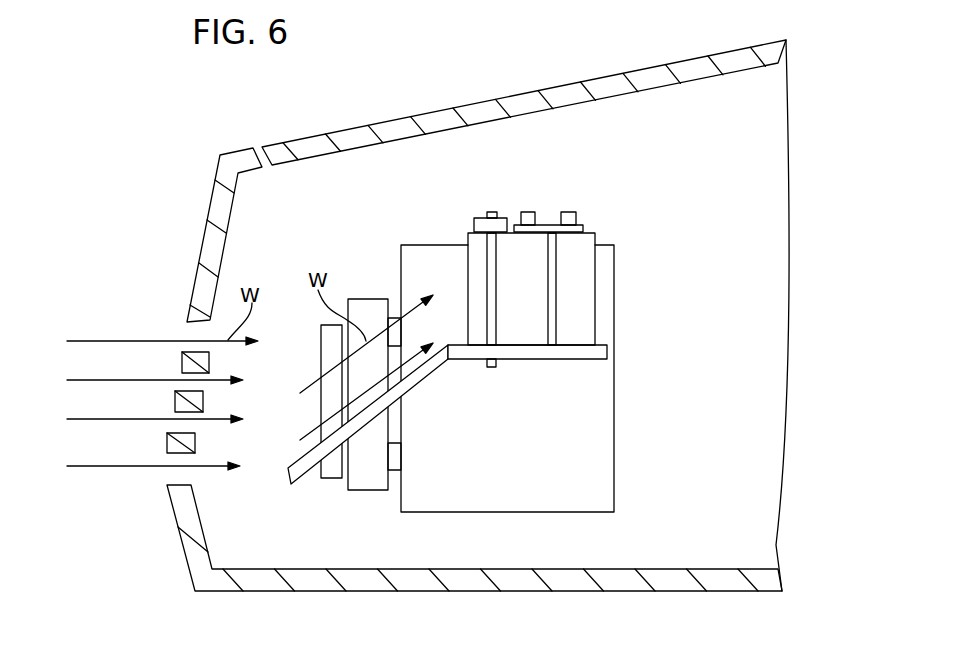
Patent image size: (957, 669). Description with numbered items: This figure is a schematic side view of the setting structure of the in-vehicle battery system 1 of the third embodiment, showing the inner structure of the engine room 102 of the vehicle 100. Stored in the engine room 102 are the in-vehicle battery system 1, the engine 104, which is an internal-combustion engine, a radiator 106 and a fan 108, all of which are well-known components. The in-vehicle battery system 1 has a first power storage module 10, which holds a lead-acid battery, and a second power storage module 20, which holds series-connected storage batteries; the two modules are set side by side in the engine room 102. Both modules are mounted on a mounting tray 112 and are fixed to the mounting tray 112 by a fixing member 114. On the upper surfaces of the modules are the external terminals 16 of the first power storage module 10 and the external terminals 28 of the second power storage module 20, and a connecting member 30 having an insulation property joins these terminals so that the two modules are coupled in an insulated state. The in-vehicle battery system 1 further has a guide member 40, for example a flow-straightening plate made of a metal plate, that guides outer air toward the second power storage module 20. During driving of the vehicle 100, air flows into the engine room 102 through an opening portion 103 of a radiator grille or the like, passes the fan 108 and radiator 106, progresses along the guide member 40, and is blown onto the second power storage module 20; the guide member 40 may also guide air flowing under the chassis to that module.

The in-vehicle battery system 1 is at (609, 313).
The first power storage module 10 is at (538, 264).
The external terminals 16 is at (527, 212).
The second power storage module 20 is at (595, 282).
The external terminals 28 is at (570, 212).
The connecting member 30 is at (543, 226).
The guide member 40 is at (437, 378).
The vehicle 100 is at (489, 344).
The engine room 102 is at (760, 548).
The opening portion 103 is at (178, 480).
The engine 104 is at (614, 483).
The radiator 106 is at (370, 492).
The fan 108 is at (330, 480).
The mounting tray 112 is at (580, 359).
The fixing member 114 is at (480, 218).